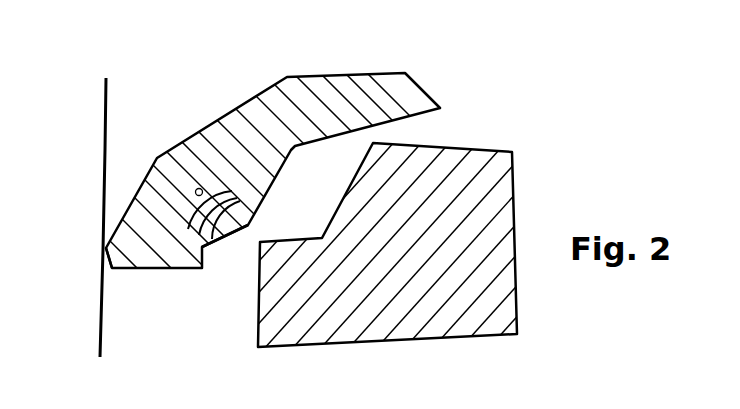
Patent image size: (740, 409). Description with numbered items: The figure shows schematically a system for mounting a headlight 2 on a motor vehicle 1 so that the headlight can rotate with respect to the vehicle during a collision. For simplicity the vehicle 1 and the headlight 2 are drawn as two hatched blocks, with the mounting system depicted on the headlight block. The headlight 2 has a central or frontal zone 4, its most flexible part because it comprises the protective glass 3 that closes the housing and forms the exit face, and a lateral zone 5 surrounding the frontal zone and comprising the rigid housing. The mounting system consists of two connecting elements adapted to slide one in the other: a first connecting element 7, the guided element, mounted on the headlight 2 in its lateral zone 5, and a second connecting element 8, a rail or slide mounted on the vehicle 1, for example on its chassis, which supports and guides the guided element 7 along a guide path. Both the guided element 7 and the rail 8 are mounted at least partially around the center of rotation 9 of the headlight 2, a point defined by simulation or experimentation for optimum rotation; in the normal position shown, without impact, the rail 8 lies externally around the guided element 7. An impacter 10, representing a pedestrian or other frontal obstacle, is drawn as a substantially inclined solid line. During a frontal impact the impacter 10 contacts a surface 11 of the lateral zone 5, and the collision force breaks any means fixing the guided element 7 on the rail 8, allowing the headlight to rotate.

The vehicle 1 is at (447, 313).
The headlight 2 is at (343, 103).
The protective glass 3 is at (380, 85).
The central zone 4 is at (230, 143).
The lateral zone 5 is at (153, 262).
The first connecting element 7 is at (199, 229).
The second connecting element 8 is at (219, 240).
The center of rotation 9 is at (198, 188).
The impacter 10 is at (106, 118).
The surface 11 is at (106, 247).